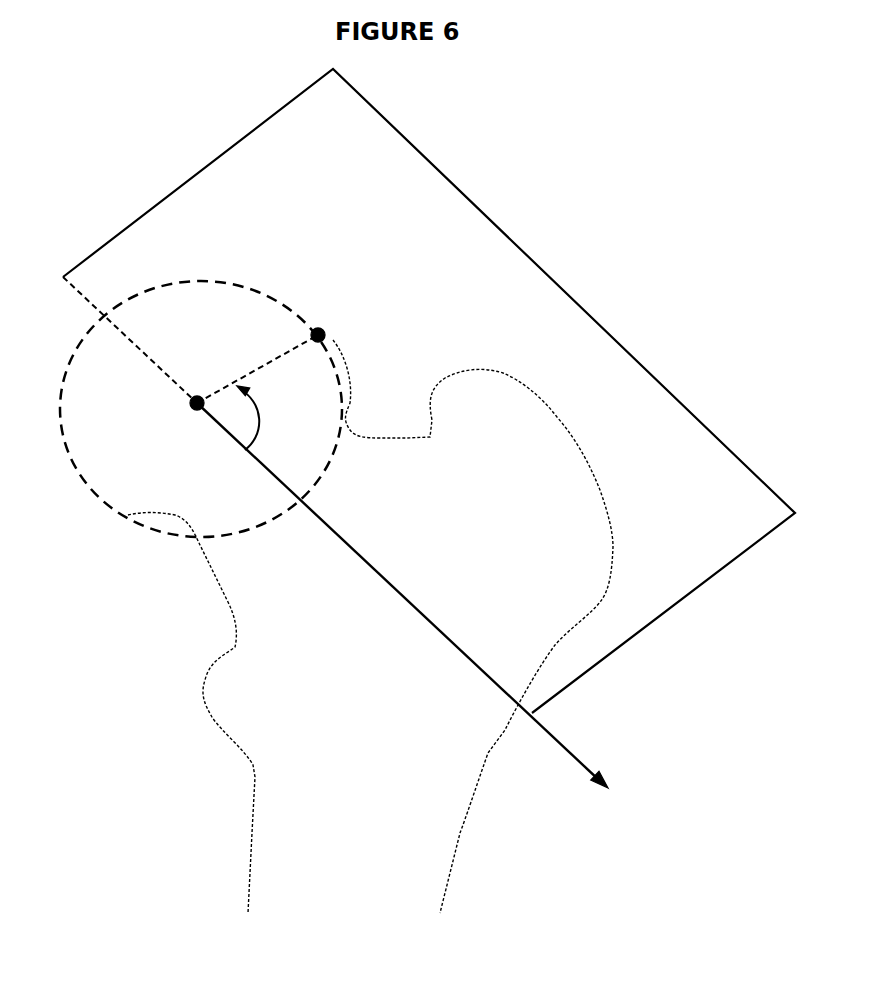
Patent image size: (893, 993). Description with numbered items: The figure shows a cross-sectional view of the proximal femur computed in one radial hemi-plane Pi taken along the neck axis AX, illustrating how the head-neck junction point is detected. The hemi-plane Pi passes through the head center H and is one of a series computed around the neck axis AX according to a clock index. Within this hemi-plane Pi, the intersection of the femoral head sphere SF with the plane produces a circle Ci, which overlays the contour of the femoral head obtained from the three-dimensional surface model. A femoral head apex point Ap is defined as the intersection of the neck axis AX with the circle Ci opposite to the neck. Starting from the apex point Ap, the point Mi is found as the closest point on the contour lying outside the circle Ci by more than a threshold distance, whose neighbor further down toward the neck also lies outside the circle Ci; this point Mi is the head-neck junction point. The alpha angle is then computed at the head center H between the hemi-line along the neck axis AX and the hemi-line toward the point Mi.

The hemi-plane Pi is at (429, 391).
The neck axis AX is at (421, 601).
The femoral head sphere SF is at (188, 409).
The circle Ci is at (342, 456).
The head center H is at (178, 403).
The femoral head apex point Ap is at (130, 340).
The head-neck junction point Mi is at (290, 354).